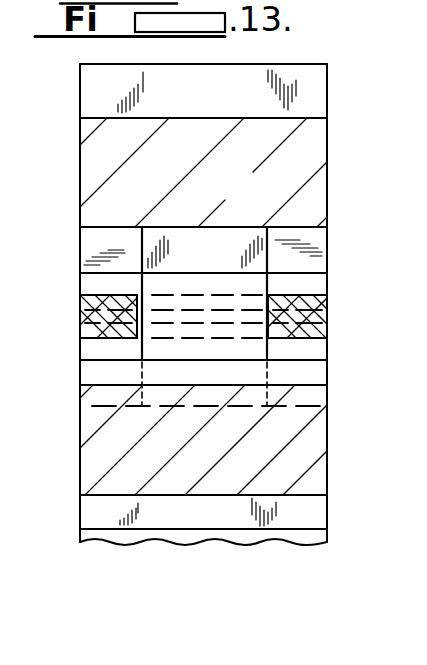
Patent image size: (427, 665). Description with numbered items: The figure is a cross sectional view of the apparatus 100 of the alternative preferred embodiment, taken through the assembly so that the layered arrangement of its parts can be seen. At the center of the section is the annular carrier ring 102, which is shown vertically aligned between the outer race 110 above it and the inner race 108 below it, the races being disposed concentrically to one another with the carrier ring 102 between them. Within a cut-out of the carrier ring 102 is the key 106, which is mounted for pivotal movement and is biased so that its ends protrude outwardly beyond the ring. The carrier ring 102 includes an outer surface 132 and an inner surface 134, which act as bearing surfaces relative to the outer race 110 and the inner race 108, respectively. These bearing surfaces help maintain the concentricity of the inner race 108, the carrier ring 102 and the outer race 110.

The apparatus 100 is at (55, 122).
The carrier ring 102 is at (317, 332).
The key 106 is at (219, 236).
The inner race 108 is at (107, 452).
The outer race 110 is at (110, 170).
The outer surface 132 is at (313, 293).
The inner surface 134 is at (103, 342).